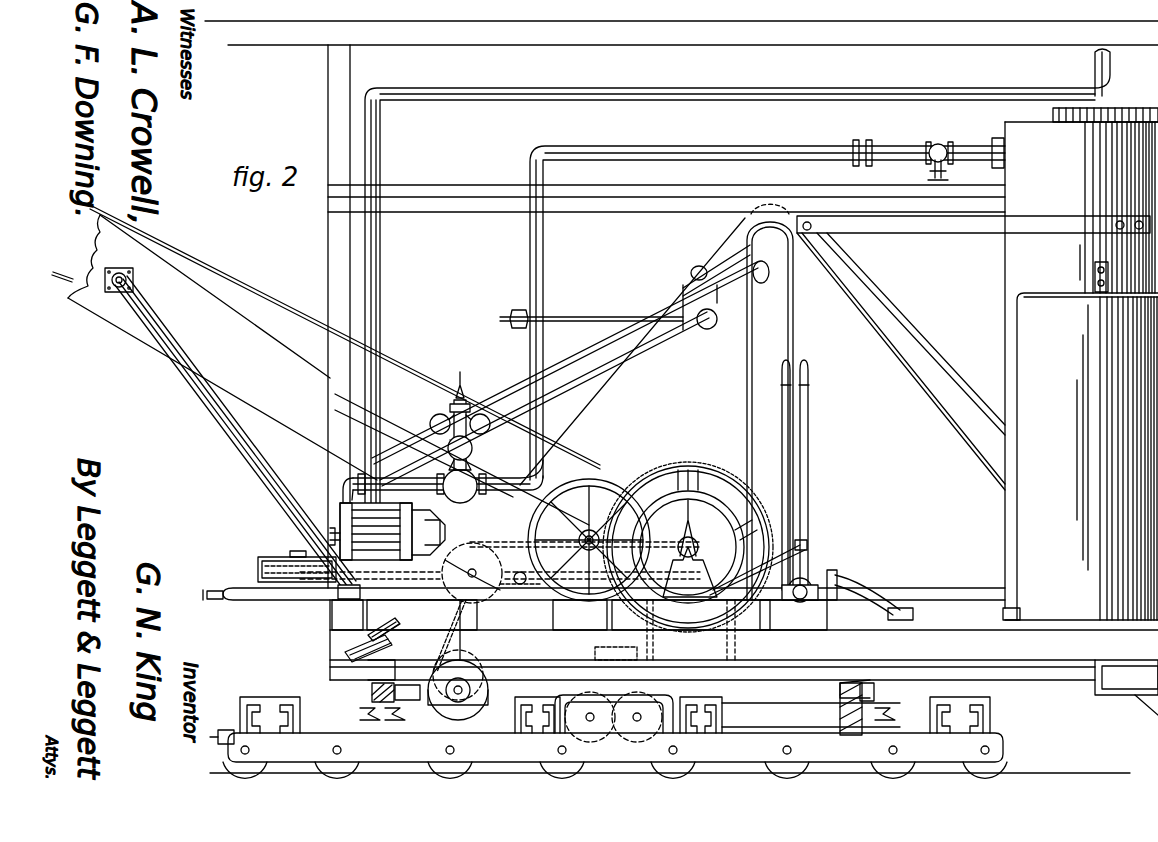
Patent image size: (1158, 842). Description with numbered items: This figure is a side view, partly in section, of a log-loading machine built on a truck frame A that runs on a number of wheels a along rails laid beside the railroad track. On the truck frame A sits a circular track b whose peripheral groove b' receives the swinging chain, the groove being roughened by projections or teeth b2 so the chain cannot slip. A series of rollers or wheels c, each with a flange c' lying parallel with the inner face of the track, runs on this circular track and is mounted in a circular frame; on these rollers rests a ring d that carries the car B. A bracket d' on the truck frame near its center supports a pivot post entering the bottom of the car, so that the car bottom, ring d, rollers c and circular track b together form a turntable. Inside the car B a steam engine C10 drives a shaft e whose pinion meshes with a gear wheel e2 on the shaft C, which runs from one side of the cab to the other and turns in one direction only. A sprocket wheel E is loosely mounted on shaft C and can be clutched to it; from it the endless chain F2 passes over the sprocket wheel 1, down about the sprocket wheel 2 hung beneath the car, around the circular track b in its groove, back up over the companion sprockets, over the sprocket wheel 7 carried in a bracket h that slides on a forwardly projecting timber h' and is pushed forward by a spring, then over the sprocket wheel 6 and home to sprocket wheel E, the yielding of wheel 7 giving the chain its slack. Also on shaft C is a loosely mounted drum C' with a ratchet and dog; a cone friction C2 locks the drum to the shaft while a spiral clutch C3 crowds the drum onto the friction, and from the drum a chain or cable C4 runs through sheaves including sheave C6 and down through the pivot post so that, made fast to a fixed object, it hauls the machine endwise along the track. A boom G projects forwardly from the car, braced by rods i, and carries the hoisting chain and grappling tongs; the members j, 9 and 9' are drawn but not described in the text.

The boom G is at (326, 365).
The boom lower chord j is at (222, 389).
The bracing rods i is at (244, 458).
The bracket h is at (297, 561).
The timber h' is at (604, 611).
The sprocket wheel 7 is at (262, 568).
The endless chain F2 is at (500, 619).
The steam engine C10 is at (387, 527).
The shaft e is at (600, 500).
The drum C' is at (580, 521).
The gear wheel e2 is at (698, 470).
The sprocket wheel E is at (698, 530).
The shaft C is at (764, 561).
The sprocket wheel 1 is at (472, 573).
The small sprocket 9 is at (518, 572).
The sprocket wheel 6 is at (520, 577).
The chain or cable C4 is at (311, 677).
The sheave C6 is at (362, 648).
The ring d is at (621, 672).
The cone friction C2 is at (370, 692).
The rollers or wheels c is at (637, 689).
The projections or teeth b2 is at (372, 712).
The peripheral groove b' is at (885, 716).
The sprocket wheel 2 is at (458, 690).
The dashed sprocket 9' is at (470, 672).
The truck frame A is at (670, 735).
The wheels a is at (572, 770).
The bracket d' is at (614, 714).
The spiral clutch C3 is at (613, 717).
The circular track b is at (811, 715).
The flange c' is at (838, 709).
The car B is at (1023, 364).